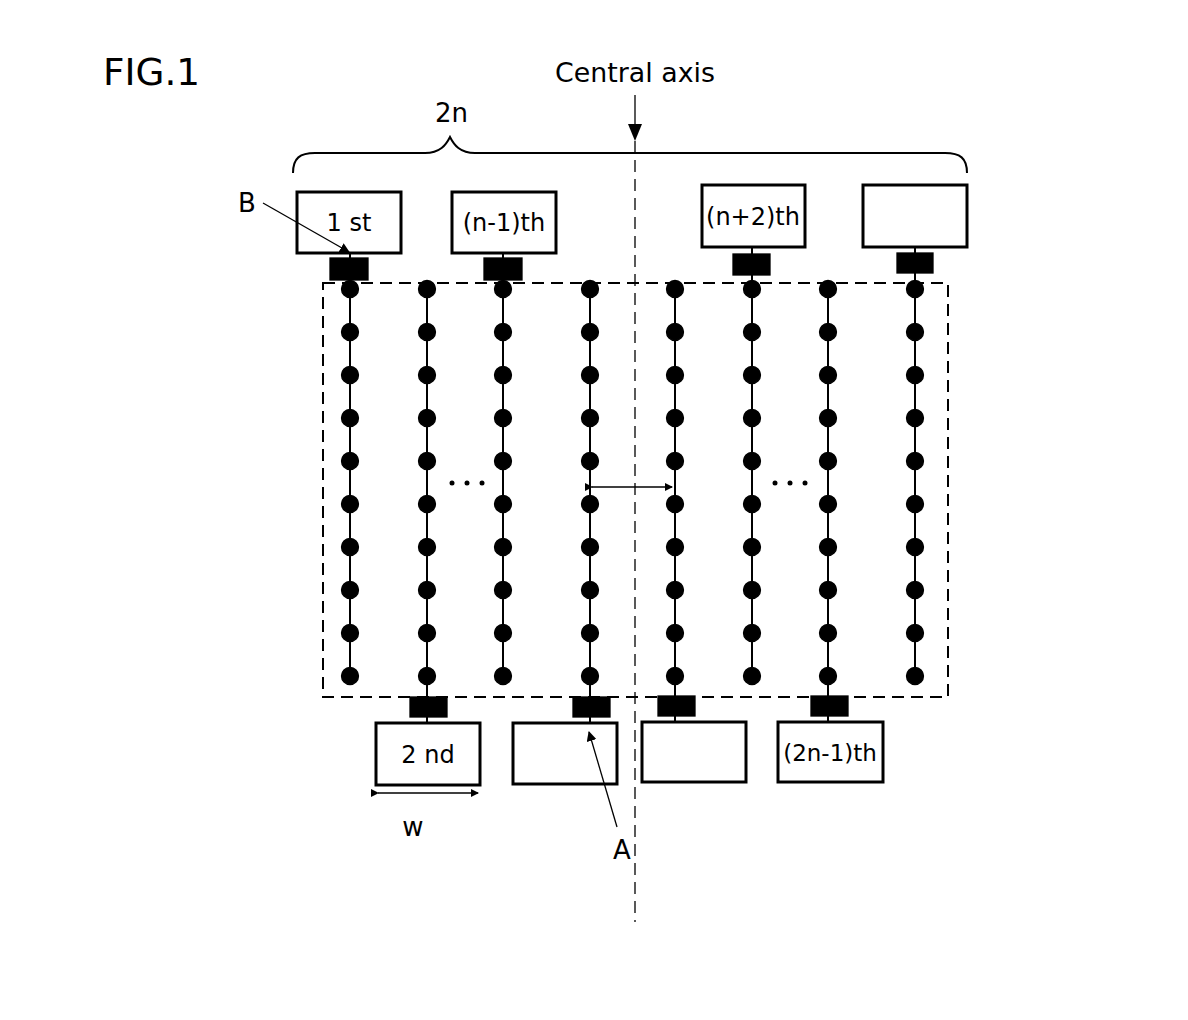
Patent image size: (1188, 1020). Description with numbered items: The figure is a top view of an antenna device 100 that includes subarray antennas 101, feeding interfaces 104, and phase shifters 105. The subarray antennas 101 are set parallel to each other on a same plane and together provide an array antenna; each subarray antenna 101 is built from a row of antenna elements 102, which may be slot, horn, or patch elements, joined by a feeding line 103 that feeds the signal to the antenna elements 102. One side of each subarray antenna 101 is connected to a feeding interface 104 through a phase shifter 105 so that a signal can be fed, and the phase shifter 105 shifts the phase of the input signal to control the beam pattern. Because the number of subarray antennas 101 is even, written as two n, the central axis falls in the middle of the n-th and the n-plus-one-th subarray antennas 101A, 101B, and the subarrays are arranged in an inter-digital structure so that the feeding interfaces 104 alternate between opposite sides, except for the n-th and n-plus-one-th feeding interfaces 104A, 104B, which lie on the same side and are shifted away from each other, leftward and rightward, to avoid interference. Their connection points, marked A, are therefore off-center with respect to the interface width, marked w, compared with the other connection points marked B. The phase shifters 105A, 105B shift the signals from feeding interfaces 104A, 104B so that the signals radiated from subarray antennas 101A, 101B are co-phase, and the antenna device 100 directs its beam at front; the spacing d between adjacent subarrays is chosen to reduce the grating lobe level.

The antenna device 100 is at (1104, 163).
The subarray antennas 101 is at (1029, 277).
The subarray antenna 101A is at (589, 281).
The subarray antenna 101B is at (674, 281).
The antenna element 102 is at (923, 367).
The feeding line 103 is at (917, 510).
The feeding interface 104 is at (967, 196).
The feeding interface 104A is at (567, 785).
The feeding interface 104B is at (693, 783).
The phase shifter 105 is at (933, 263).
The phase shifter 105A is at (573, 709).
The phase shifter 105B is at (695, 705).